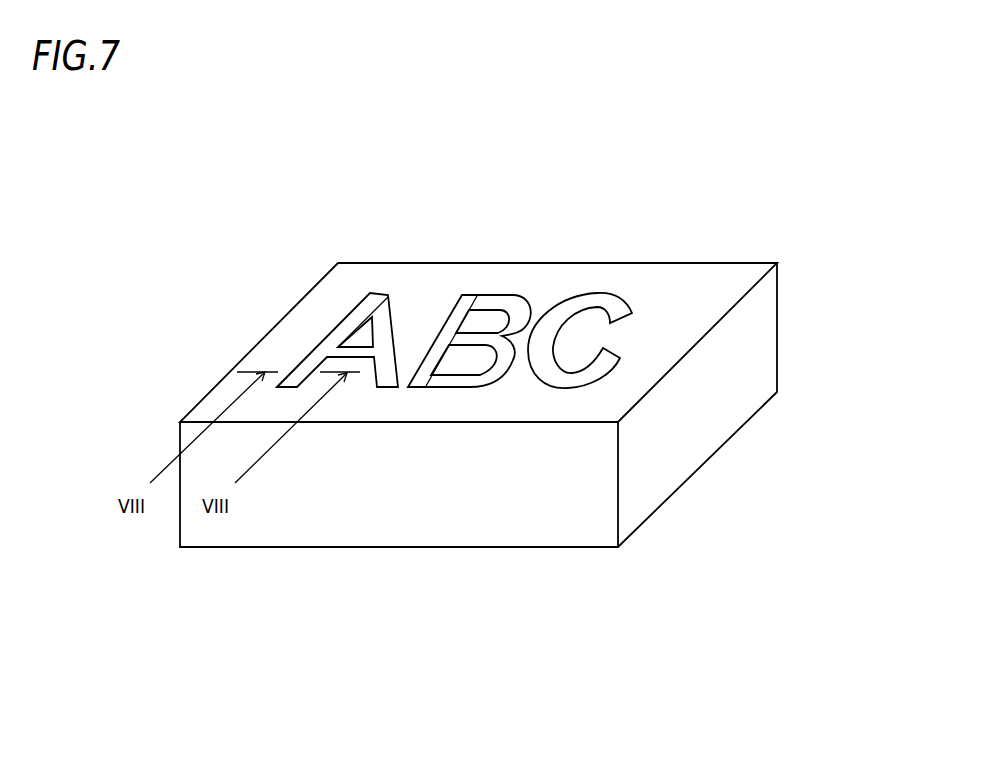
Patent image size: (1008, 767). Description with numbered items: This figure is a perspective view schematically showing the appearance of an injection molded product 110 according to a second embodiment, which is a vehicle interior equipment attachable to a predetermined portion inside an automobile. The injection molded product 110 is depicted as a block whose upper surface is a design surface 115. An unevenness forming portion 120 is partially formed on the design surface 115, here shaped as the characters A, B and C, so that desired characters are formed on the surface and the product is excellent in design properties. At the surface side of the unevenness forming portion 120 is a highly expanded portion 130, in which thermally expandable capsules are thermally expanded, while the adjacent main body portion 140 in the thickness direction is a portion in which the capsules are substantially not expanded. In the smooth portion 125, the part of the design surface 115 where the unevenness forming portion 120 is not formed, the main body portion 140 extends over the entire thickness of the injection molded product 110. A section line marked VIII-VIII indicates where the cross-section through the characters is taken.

The injection molded product 110 is at (804, 181).
The design surface 115 is at (693, 277).
The unevenness forming portion 120 is at (512, 292).
The smooth portion 125 is at (517, 402).
The highly expanded portion 130 is at (492, 292).
The main body portion 140 is at (635, 383).